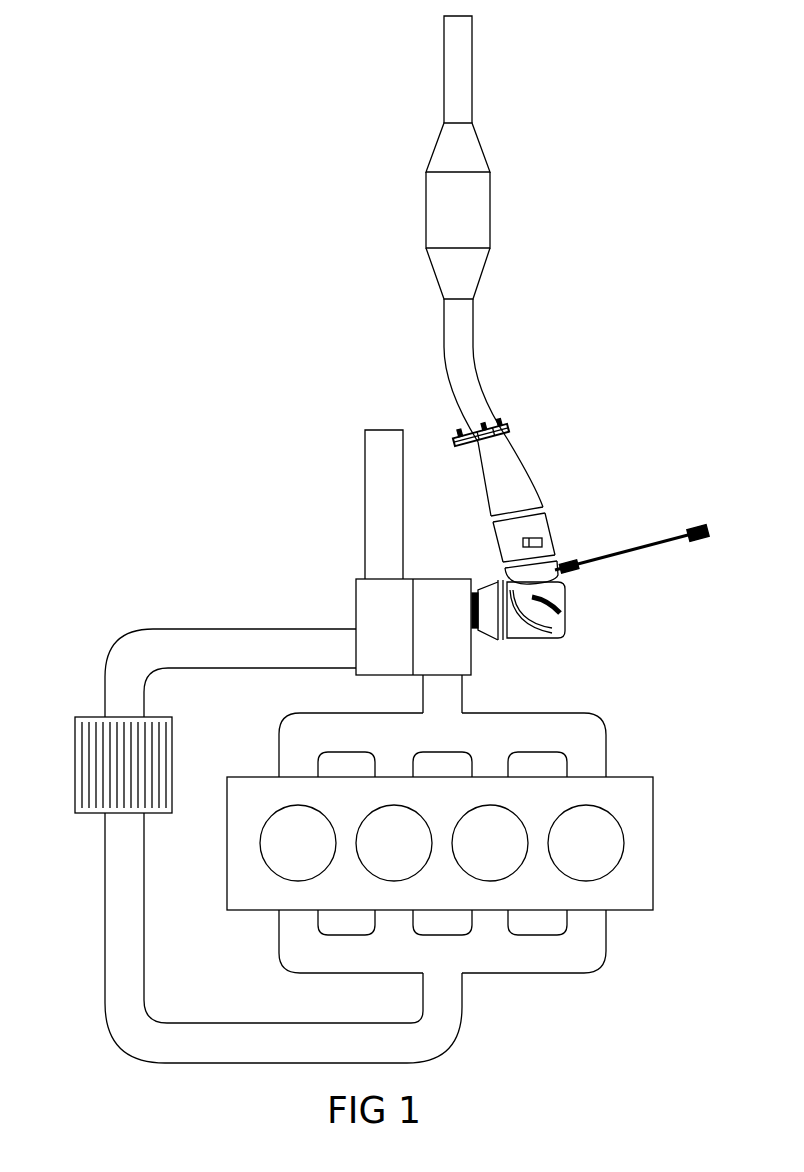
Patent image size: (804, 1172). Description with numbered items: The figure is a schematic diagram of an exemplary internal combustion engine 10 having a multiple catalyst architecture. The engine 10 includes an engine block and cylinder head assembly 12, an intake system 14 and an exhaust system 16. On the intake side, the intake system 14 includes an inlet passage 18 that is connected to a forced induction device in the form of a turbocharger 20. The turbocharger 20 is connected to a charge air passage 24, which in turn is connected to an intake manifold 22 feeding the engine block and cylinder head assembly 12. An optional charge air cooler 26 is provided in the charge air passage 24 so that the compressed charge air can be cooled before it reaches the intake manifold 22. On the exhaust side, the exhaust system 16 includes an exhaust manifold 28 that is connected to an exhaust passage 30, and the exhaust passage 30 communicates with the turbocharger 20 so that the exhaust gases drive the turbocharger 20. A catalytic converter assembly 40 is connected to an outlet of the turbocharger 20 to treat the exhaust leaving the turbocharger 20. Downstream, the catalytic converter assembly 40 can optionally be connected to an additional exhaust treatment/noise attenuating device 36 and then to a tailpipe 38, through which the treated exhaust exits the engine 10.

The internal combustion engine 10 is at (572, 445).
The engine block and cylinder head assembly 12 is at (653, 843).
The intake system 14 is at (487, 1043).
The exhaust system 16 is at (603, 698).
The inlet passage 18 is at (375, 482).
The turbocharger 20 is at (433, 583).
The intake manifold 22 is at (590, 972).
The charge air passage 24 is at (118, 900).
The charge air cooler 26 is at (75, 765).
The exhaust manifold 28 is at (603, 727).
The exhaust passage 30 is at (448, 697).
The exhaust treatment/noise attenuating device 36 is at (435, 205).
The tailpipe 38 is at (462, 71).
The catalytic converter assembly 40 is at (540, 497).